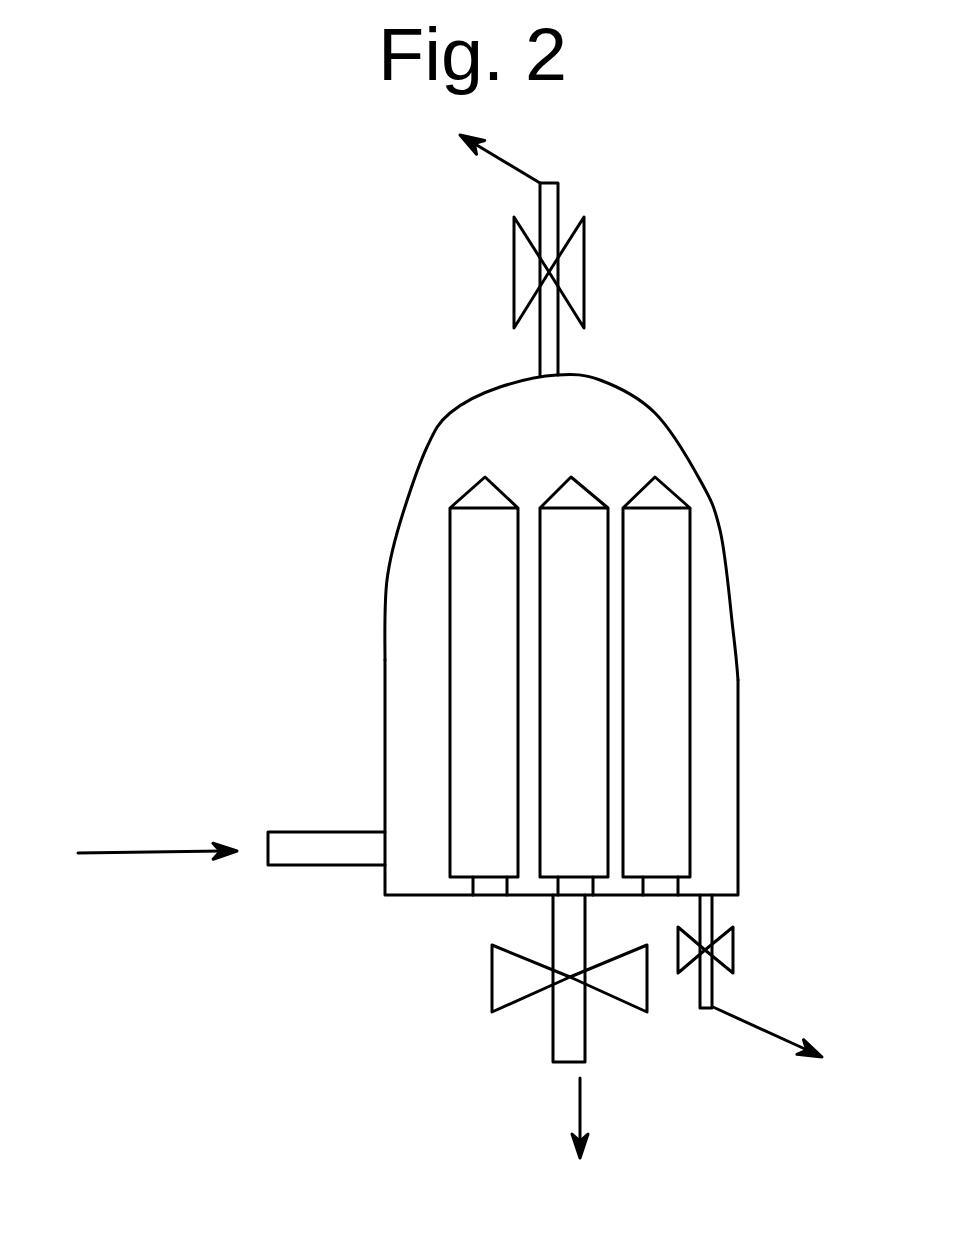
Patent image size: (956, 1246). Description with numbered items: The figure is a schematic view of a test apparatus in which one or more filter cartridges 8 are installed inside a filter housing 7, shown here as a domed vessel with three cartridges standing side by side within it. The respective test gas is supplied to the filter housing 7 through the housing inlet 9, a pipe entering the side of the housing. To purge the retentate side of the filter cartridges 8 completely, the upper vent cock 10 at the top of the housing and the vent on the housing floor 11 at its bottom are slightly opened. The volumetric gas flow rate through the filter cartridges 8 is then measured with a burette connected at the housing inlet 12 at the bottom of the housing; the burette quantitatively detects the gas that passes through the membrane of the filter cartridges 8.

The filter housing 7 is at (652, 413).
The filter cartridges 8 is at (655, 476).
The housing inlet 9 is at (305, 868).
The upper vent cock 10 is at (555, 213).
The vent on the housing floor 11 is at (712, 910).
The housing inlet 12 is at (553, 1043).